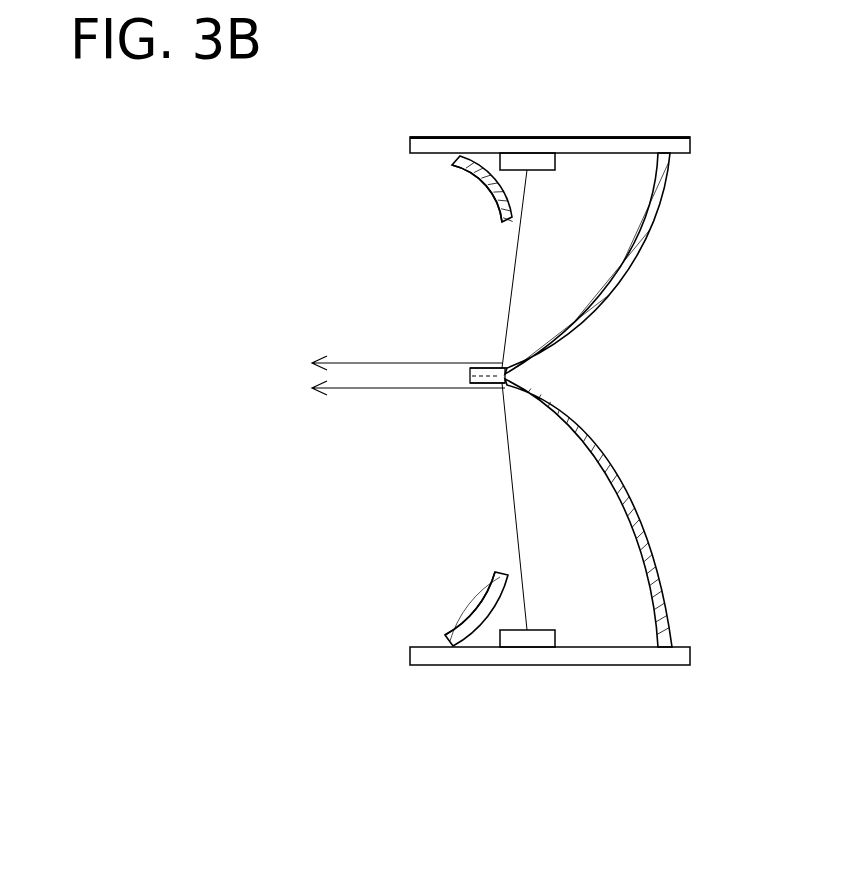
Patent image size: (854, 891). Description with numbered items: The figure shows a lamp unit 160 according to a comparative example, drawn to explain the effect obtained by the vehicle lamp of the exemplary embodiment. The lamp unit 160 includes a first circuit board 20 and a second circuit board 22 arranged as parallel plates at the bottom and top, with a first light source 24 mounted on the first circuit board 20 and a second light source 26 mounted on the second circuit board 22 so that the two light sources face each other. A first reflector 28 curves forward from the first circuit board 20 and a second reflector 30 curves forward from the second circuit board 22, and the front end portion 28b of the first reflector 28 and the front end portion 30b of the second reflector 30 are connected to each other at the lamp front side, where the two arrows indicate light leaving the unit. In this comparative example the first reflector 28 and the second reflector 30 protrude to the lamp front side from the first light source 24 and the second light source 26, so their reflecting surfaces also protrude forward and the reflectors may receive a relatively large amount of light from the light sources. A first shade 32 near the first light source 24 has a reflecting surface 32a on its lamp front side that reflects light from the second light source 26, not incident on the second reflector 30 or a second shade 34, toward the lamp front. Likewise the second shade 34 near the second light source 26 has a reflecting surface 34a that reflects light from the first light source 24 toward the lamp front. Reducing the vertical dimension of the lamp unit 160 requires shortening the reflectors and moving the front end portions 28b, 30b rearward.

The lamp unit 160 is at (550, 791).
The first circuit board 20 is at (618, 657).
The second circuit board 22 is at (636, 148).
The first light source 24 is at (556, 638).
The second light source 26 is at (556, 163).
The first reflector 28 is at (632, 498).
The front end portion of the first reflector 28b is at (466, 380).
The second reflector 30 is at (626, 276).
The front end portion of the second reflector 30b is at (470, 371).
The first shade 32 is at (477, 623).
The reflecting surface of the first shade 32a is at (457, 623).
The second shade 34 is at (478, 162).
The reflecting surface of the second shade 34a is at (471, 194).